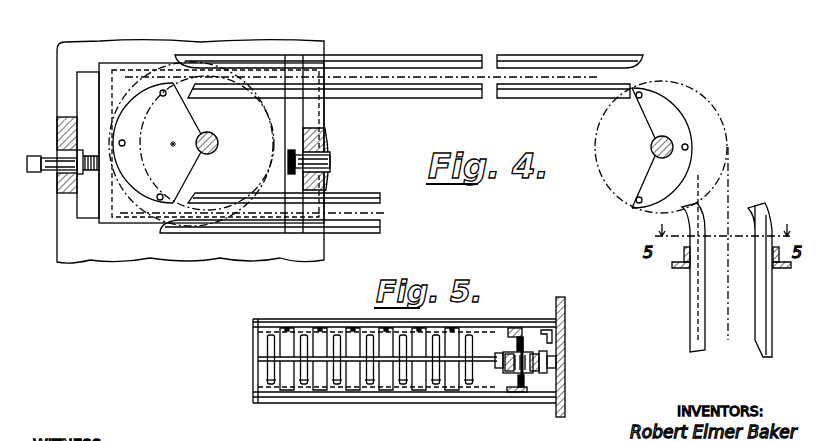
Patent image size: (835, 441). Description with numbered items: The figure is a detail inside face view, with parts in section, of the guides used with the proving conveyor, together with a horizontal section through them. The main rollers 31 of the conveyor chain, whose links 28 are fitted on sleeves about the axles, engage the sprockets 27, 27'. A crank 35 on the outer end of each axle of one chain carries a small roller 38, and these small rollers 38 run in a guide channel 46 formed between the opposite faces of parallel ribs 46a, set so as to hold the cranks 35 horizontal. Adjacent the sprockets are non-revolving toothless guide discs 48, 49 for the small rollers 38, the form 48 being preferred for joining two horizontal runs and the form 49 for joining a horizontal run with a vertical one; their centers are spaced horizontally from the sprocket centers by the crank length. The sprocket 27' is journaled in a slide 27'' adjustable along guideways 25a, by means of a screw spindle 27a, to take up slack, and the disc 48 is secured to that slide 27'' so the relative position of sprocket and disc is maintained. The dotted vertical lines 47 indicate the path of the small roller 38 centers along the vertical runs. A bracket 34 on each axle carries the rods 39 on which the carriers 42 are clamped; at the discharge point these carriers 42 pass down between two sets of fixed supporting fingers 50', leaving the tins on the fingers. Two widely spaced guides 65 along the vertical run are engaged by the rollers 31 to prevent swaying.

In FIG. 4, the guideways 25a is at (84, 72).
In FIG. 4, the slide 27'' is at (211, 115).
In FIG. 4, the screw spindle 27a is at (58, 156).
In FIG. 4, the sprocket 27' is at (317, 144).
In FIG. 4, the sprocket 27 is at (648, 147).
In FIG. 4, the guide disc 48 is at (187, 118).
In FIG. 4, the guide disc 49 is at (656, 173).
In FIG. 4, the guide channel 46 is at (360, 78).
In FIG. 4, the parallel ribs 46a is at (424, 60).
In FIG. 4, the vertical path lines 47 is at (697, 178).
In FIG. 4, the spaced guides 65 is at (697, 305).
In FIG. 5, the spaced guides 65 is at (520, 330).
In FIG. 5, the supporting fingers 50' is at (369, 366).
In FIG. 5, the carriers 42 is at (338, 388).
In FIG. 5, the rods 39 is at (443, 380).
In FIG. 5, the bracket 34 is at (498, 377).
In FIG. 5, the links 28 is at (523, 373).
In FIG. 5, the crank 35 is at (548, 358).
In FIG. 5, the roller 31 is at (508, 345).
In FIG. 5, the small rollers 38 is at (548, 337).